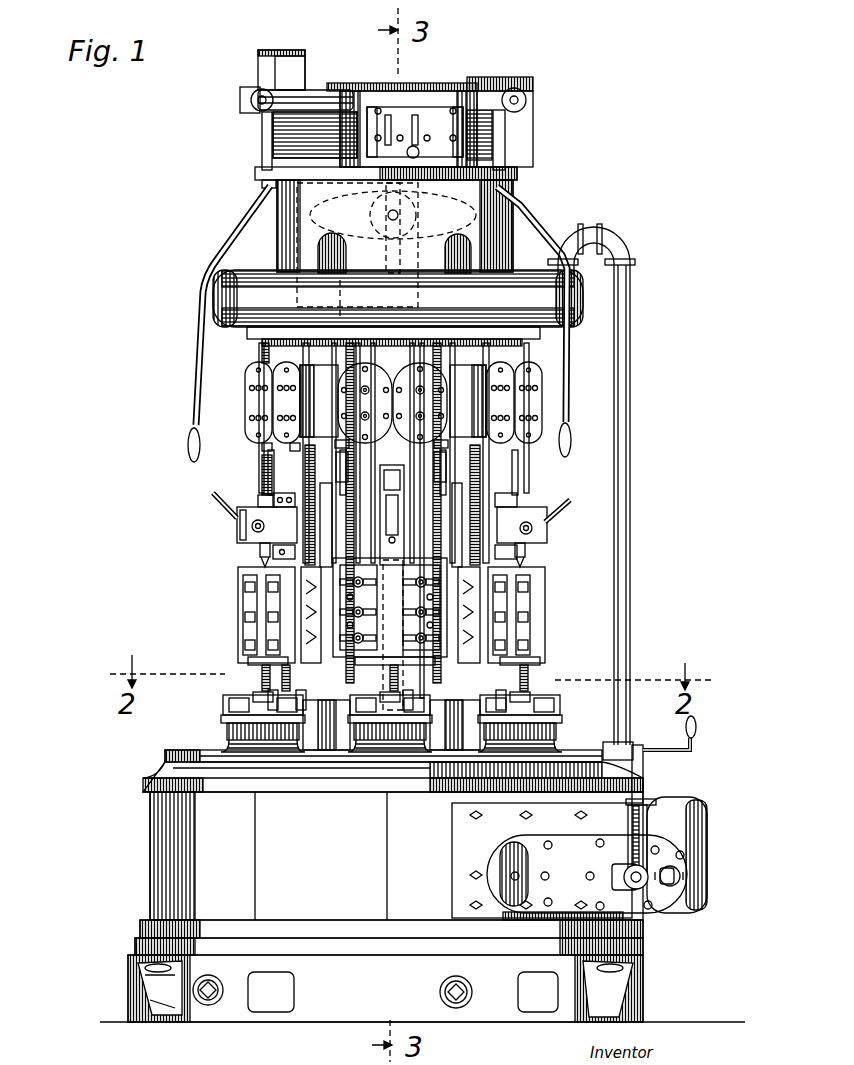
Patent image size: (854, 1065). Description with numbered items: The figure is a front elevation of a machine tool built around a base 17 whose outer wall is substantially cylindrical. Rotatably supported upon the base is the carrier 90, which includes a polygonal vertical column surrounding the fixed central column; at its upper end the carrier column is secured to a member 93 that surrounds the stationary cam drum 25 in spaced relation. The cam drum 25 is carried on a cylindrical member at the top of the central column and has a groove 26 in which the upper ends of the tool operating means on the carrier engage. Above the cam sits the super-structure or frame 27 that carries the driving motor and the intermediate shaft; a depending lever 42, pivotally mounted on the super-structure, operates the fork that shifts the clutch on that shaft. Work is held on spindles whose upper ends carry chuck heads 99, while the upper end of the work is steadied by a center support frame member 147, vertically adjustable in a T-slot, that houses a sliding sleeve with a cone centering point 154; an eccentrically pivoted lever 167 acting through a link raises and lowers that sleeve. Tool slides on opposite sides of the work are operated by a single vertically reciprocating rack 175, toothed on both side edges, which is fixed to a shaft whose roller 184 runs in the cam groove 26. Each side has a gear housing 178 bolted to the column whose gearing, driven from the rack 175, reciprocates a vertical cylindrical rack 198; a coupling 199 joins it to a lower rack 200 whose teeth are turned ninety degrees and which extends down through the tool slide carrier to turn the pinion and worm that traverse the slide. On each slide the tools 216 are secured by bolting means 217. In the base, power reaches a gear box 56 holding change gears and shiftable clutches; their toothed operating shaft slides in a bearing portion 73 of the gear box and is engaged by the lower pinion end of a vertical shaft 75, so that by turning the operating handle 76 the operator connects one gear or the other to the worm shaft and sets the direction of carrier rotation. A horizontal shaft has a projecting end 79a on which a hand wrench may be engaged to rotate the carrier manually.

The super-structure or frame 27 is at (440, 85).
The stationary cam drum 25 is at (262, 192).
The cam groove 26 is at (268, 214).
The depending lever 42 is at (224, 245).
The member surrounding the cam 93 is at (520, 208).
The roller 184 is at (398, 308).
The vertically reciprocating rack 175 is at (397, 343).
The vertical cylindrical rack 198 is at (262, 352).
The gear housing 178 is at (255, 400).
The coupling 199 is at (262, 447).
The center support frame member 147 is at (268, 508).
The lever 167 is at (228, 503).
The cone centering point 154 is at (262, 563).
The tools 216 is at (255, 584).
The bolting means 217 is at (250, 594).
The rack 200 is at (262, 678).
The chuck head 99 is at (228, 727).
The carrier 90 is at (200, 756).
The base 17 is at (422, 907).
The bearing portion of the gear box 73 is at (620, 870).
The projecting end of shaft 79a is at (700, 877).
The gear box 56 is at (665, 903).
The vertical shaft 75 is at (646, 780).
The operating handle 76 is at (703, 732).